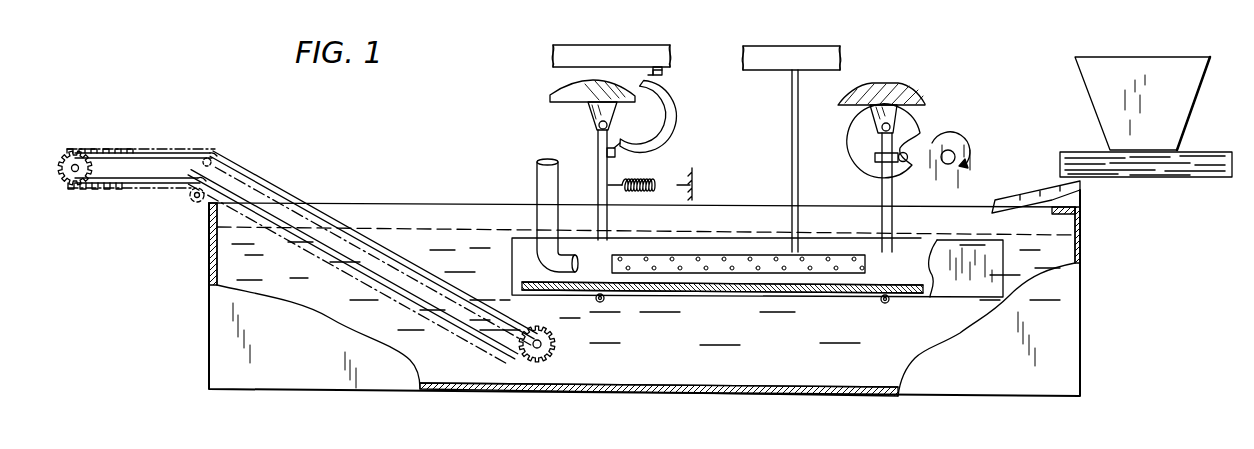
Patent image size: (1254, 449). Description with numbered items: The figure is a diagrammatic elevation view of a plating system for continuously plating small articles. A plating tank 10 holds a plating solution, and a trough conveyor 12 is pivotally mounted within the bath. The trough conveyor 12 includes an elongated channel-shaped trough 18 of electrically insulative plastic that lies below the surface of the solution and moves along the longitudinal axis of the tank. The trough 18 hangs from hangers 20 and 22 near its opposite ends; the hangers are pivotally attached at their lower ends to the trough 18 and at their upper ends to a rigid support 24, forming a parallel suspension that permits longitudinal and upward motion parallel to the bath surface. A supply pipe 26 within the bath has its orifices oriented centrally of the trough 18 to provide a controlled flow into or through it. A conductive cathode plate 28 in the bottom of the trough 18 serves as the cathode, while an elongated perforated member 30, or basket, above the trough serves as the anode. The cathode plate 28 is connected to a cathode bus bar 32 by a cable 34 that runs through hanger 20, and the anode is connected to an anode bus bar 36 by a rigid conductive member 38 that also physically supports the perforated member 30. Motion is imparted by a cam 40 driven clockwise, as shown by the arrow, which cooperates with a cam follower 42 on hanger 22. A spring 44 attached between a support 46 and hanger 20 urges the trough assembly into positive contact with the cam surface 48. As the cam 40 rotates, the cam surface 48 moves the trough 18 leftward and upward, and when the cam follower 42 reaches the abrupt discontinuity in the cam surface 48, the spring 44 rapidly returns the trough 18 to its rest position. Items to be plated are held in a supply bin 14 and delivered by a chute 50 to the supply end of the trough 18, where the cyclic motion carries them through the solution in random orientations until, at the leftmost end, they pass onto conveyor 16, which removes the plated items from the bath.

The plating tank 10 is at (1068, 344).
The trough conveyor 12 is at (739, 302).
The supply bin 14 is at (1134, 170).
The conveyor means 16 is at (187, 203).
The trough 18 is at (520, 262).
The hanger 20 is at (597, 160).
The hanger 22 is at (880, 180).
The rigid support 24 is at (560, 91).
The supply pipe 26 is at (537, 188).
The cathode plate 28 is at (905, 287).
The perforated member 30 is at (744, 262).
The cathode bus bar 32 is at (665, 60).
The cable 34 is at (659, 117).
The anode bus bar 36 is at (770, 60).
The rigid conductive member 38 is at (790, 125).
The cam 40 is at (963, 130).
The cam follower 42 is at (904, 163).
The spring 44 is at (664, 179).
The support 46 is at (700, 182).
The cam surface 48 is at (912, 112).
The chute 50 is at (1010, 200).